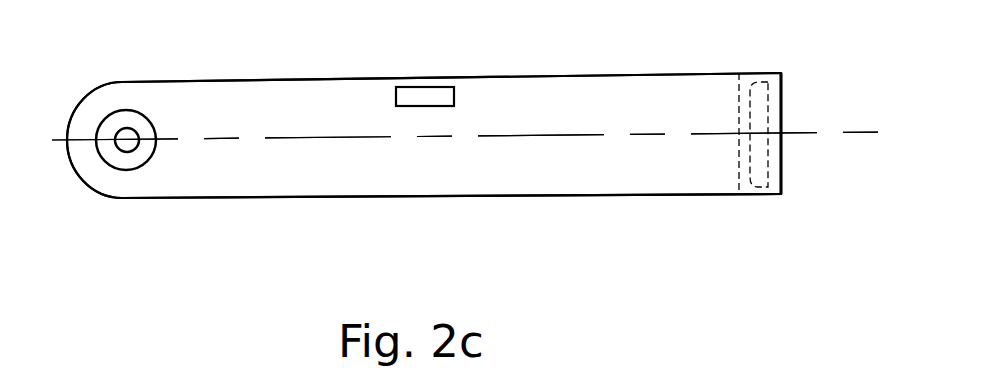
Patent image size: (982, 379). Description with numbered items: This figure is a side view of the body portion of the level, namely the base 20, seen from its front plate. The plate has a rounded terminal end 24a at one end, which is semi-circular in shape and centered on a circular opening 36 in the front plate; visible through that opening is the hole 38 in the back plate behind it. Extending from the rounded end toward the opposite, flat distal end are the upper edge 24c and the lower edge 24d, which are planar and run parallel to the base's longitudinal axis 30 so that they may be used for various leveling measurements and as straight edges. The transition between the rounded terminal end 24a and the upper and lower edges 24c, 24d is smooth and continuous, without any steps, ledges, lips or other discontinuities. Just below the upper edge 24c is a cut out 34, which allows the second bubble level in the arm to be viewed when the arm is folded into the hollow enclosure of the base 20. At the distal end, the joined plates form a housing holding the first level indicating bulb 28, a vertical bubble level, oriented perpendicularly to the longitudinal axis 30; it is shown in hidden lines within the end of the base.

The base 20 is at (390, 167).
The rounded terminal end 24a is at (86, 197).
The upper edge 24c is at (542, 72).
The lower edge 24d is at (522, 205).
The first level indicating bulb 28 is at (772, 118).
The longitudinal axis 30 is at (50, 150).
The cut out 34 is at (427, 80).
The circular opening 36 is at (158, 178).
The hole 38 is at (136, 131).